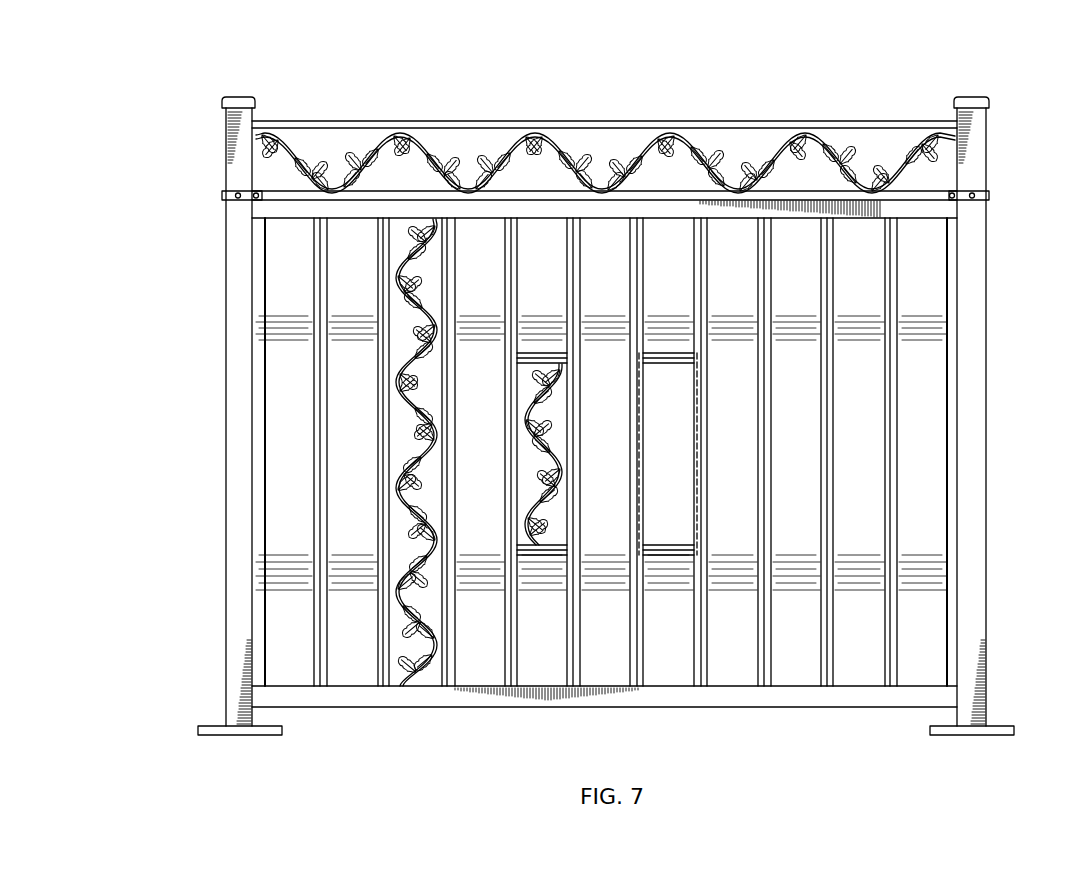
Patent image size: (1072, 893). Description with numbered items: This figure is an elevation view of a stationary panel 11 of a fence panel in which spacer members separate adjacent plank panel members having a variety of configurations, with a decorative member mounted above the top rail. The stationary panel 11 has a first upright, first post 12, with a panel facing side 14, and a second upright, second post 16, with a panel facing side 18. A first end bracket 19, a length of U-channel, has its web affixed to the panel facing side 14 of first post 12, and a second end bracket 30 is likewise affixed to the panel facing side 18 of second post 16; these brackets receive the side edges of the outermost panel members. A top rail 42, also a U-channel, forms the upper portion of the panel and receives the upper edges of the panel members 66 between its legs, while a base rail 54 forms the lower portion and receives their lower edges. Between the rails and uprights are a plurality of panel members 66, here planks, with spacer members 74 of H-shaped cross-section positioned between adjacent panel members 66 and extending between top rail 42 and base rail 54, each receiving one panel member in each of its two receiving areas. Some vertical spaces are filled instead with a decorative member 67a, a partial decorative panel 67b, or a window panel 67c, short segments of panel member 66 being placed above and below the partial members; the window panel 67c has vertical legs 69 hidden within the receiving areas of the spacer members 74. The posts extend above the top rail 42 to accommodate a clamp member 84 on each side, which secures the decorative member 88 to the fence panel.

The stationary panel 11 is at (742, 72).
The first post 12 is at (226, 556).
The panel facing side 14 is at (253, 530).
The second post 16 is at (986, 556).
The panel facing side 18 is at (957, 530).
The first end bracket 19 is at (258, 342).
The second end bracket 30 is at (957, 340).
The top rail 42 is at (258, 207).
The base rail 54 is at (659, 709).
The panel member 66 is at (353, 672).
The decorative member 67a is at (410, 670).
The partial decorative panel 67b is at (535, 556).
The window panel 67c is at (677, 556).
The vertical legs 69 is at (640, 440).
The spacer member 74 is at (315, 668).
The clamp member 84 is at (222, 195).
The decorative member 88 is at (552, 117).